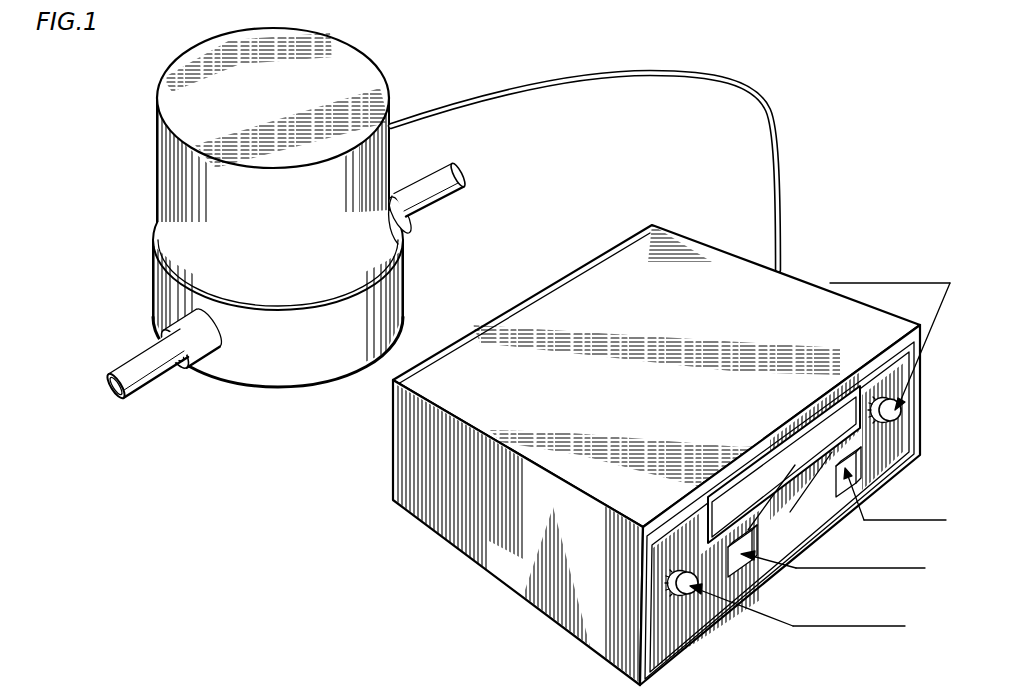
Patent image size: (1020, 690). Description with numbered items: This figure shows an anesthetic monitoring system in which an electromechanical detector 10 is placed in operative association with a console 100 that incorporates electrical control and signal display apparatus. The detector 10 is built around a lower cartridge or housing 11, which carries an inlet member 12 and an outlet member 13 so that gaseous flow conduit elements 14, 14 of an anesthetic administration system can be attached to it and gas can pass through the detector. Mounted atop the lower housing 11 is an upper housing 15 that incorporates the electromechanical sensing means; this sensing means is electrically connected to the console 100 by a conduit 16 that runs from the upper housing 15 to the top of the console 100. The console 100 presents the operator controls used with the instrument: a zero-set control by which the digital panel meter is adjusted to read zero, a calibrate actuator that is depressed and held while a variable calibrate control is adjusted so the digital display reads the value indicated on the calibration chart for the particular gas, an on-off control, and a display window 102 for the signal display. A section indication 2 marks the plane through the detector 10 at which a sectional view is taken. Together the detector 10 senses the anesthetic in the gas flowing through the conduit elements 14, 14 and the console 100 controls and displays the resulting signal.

The section line 2- 2 is at (485, 60).
The electromechanical detector 10 is at (308, 246).
The lower cartridge or housing 11 is at (262, 357).
The inlet member 12 is at (196, 372).
The outlet member 13 is at (408, 228).
The gaseous flow conduit elements 14 is at (133, 400).
The upper housing 15 is at (270, 221).
The conduit 16 is at (768, 134).
The console 100 is at (671, 434).
The display window 102 is at (754, 488).